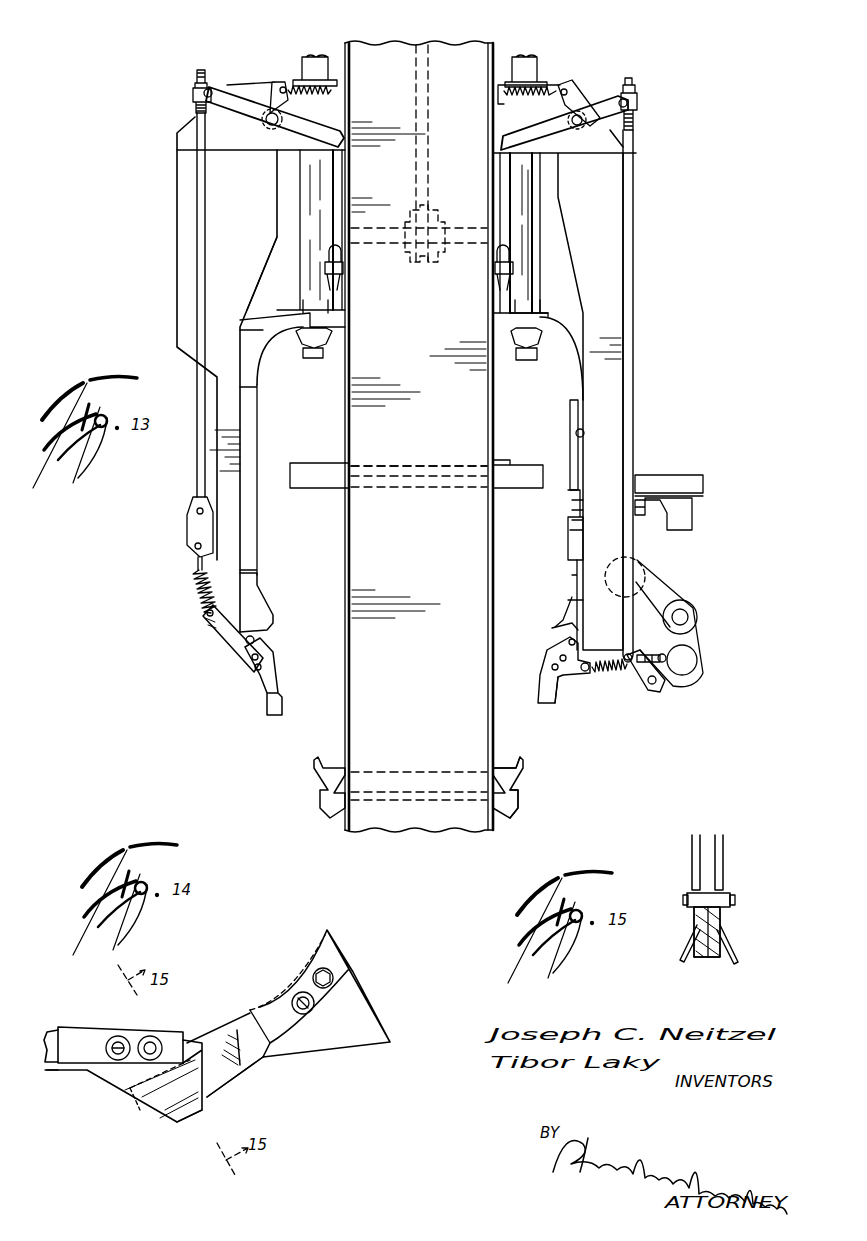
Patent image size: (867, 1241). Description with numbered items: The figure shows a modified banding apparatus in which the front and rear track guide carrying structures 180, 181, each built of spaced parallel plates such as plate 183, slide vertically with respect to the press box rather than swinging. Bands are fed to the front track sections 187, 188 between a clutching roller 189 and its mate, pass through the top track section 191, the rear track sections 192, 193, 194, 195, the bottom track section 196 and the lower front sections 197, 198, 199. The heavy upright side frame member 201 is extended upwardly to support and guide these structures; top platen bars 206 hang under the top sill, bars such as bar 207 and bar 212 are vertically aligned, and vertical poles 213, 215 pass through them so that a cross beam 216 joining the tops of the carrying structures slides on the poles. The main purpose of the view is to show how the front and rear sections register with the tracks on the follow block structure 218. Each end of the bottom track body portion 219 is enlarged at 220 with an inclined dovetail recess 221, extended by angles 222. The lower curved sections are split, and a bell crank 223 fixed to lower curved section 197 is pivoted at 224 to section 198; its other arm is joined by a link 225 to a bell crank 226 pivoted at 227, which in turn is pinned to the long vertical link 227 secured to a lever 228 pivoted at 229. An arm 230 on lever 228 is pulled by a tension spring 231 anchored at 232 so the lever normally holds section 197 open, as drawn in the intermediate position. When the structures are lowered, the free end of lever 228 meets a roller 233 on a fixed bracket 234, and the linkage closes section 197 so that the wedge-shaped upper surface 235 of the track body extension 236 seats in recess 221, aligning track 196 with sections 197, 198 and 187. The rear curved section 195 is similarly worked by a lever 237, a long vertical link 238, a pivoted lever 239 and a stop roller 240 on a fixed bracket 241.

In FIG. 13, the track guide carrying structure 180 is at (575, 288).
In FIG. 13, the track guide carrying structure 181 is at (169, 192).
In FIG. 13, the parallel plate 183 is at (200, 467).
In FIG. 13, the front track section 187 is at (573, 450).
In FIG. 13, the front track section 188 is at (570, 372).
In FIG. 13, the clutching roller 189 is at (645, 580).
In FIG. 13, the top track section 191 is at (398, 492).
In FIG. 13, the rear track section 192 is at (257, 368).
In FIG. 13, the rear track section 193 is at (258, 415).
In FIG. 13, the rear track section 194 is at (268, 603).
In FIG. 13, the rear track section 195 is at (280, 668).
In FIG. 14, the bottom track section 196 is at (82, 1025).
In FIG. 13, the lower front section 197 is at (548, 650).
In FIG. 14, the lower front section 197 is at (295, 972).
In FIG. 13, the lower front section 198 is at (570, 603).
In FIG. 13, the lower front section 199 is at (570, 537).
In FIG. 13, the upright side frame member 201 is at (345, 712).
In FIG. 13, the top platen bar 206 is at (308, 488).
In FIG. 13, the bar 207 is at (345, 325).
In FIG. 14, the bar 212 is at (333, 1043).
In FIG. 13, the vertical pole 213 is at (532, 182).
In FIG. 13, the vertical pole 215 is at (298, 180).
In FIG. 13, the cross beam 216 is at (323, 112).
In FIG. 13, the follow block structure 218 is at (504, 758).
In FIG. 14, the bottom track body portion 219 is at (50, 1070).
In FIG. 13, the enlargement 220 is at (510, 790).
In FIG. 14, the enlargement 220 is at (102, 1080).
In FIG. 15, the enlargement 220 is at (722, 900).
In FIG. 13, the inclined dovetail recess 221 is at (516, 808).
In FIG. 14, the inclined dovetail recess 221 is at (140, 1105).
In FIG. 15, the inclined dovetail recess 221 is at (694, 930).
In FIG. 14, the angle 222 is at (170, 1123).
In FIG. 15, the angle 222 is at (686, 950).
In FIG. 13, the bell crank 223 is at (566, 685).
In FIG. 13, the pivot 224 is at (552, 628).
In FIG. 13, the link 225 is at (608, 670).
In FIG. 13, the bell crank 226 is at (638, 685).
In FIG. 13, the long vertical link 227 is at (635, 312).
In FIG. 15, the long vertical link 227 is at (708, 960).
In FIG. 13, the lever 228 is at (603, 100).
In FIG. 13, the pivot 229 is at (580, 130).
In FIG. 13, the arm 230 is at (566, 83).
In FIG. 13, the tension spring 231 is at (506, 100).
In FIG. 13, the anchor 232 is at (500, 90).
In FIG. 13, the roller 233 is at (510, 250).
In FIG. 13, the fixed bracket 234 is at (513, 265).
In FIG. 14, the wedge-shaped upper surface 235 is at (222, 1045).
In FIG. 14, the track body extension 236 is at (228, 1080).
In FIG. 13, the lever 237 is at (222, 645).
In FIG. 13, the long vertical link 238 is at (196, 287).
In FIG. 13, the pivoted lever 239 is at (240, 85).
In FIG. 13, the stop roller 240 is at (325, 250).
In FIG. 13, the fixed bracket 241 is at (343, 268).